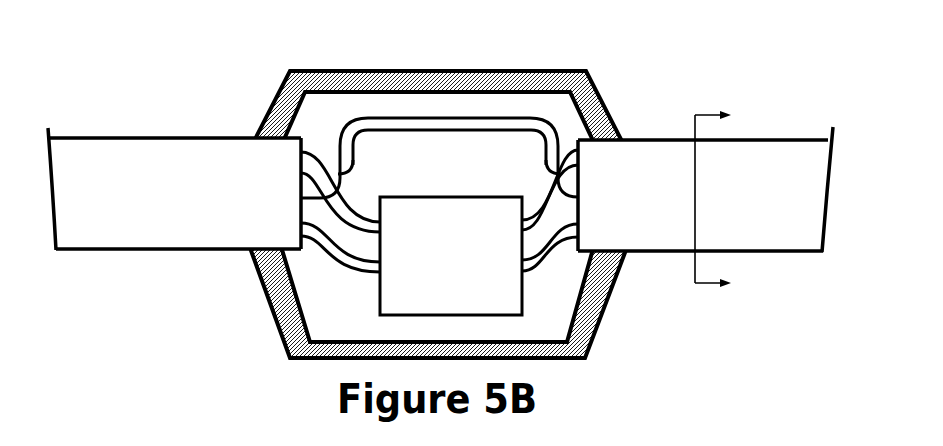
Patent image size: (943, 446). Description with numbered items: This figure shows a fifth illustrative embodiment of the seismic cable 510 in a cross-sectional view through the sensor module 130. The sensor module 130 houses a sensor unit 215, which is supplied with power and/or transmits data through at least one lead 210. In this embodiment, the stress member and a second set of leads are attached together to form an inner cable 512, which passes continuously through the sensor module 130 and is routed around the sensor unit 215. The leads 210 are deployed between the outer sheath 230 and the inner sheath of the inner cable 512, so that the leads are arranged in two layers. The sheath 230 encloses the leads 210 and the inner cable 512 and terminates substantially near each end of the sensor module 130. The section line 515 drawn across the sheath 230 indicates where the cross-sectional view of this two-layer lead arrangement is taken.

The seismic cable 510 is at (211, 52).
The sensor module 130 is at (557, 70).
The lead 210 is at (313, 147).
The sheath 230 is at (779, 139).
The inner cable 512 is at (412, 118).
The sensor unit 215 is at (470, 268).
The section line 515 is at (693, 133).